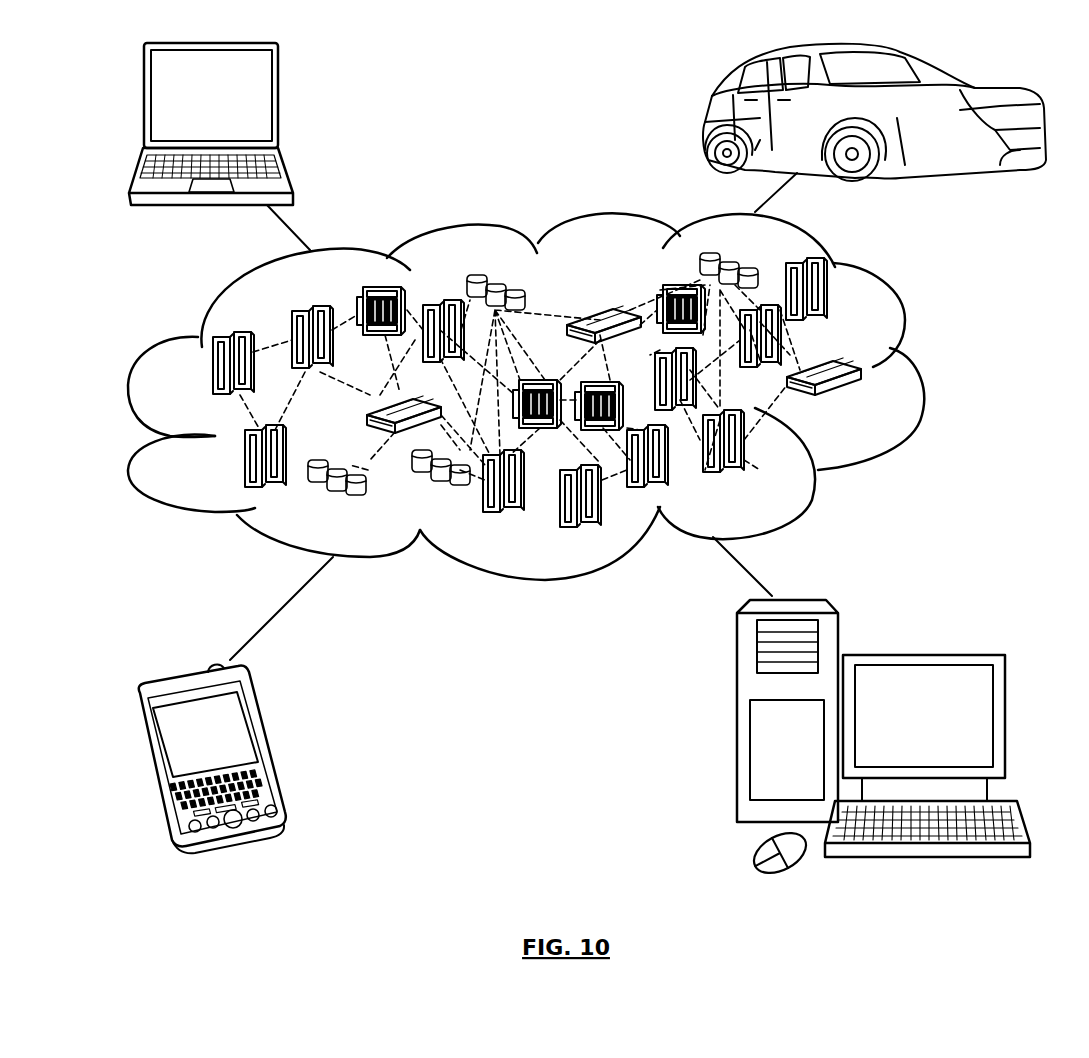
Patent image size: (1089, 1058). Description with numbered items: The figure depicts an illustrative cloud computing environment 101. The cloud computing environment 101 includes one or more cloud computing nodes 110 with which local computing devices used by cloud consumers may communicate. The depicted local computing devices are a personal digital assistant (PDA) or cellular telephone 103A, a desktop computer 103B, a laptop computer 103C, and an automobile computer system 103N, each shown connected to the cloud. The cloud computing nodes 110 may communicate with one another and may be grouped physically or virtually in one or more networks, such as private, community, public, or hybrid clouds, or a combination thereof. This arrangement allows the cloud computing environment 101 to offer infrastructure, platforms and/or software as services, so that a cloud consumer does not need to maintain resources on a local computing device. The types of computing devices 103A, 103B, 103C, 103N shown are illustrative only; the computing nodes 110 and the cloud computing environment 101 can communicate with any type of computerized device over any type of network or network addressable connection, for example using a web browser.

The cloud computing environment 101 is at (920, 367).
The cloud computing nodes 110 is at (862, 402).
The personal digital assistant (PDA) or cellular telephone 103A is at (268, 746).
The desktop computer 103B is at (922, 652).
The laptop computer 103C is at (278, 103).
The automobile computer system 103N is at (706, 110).